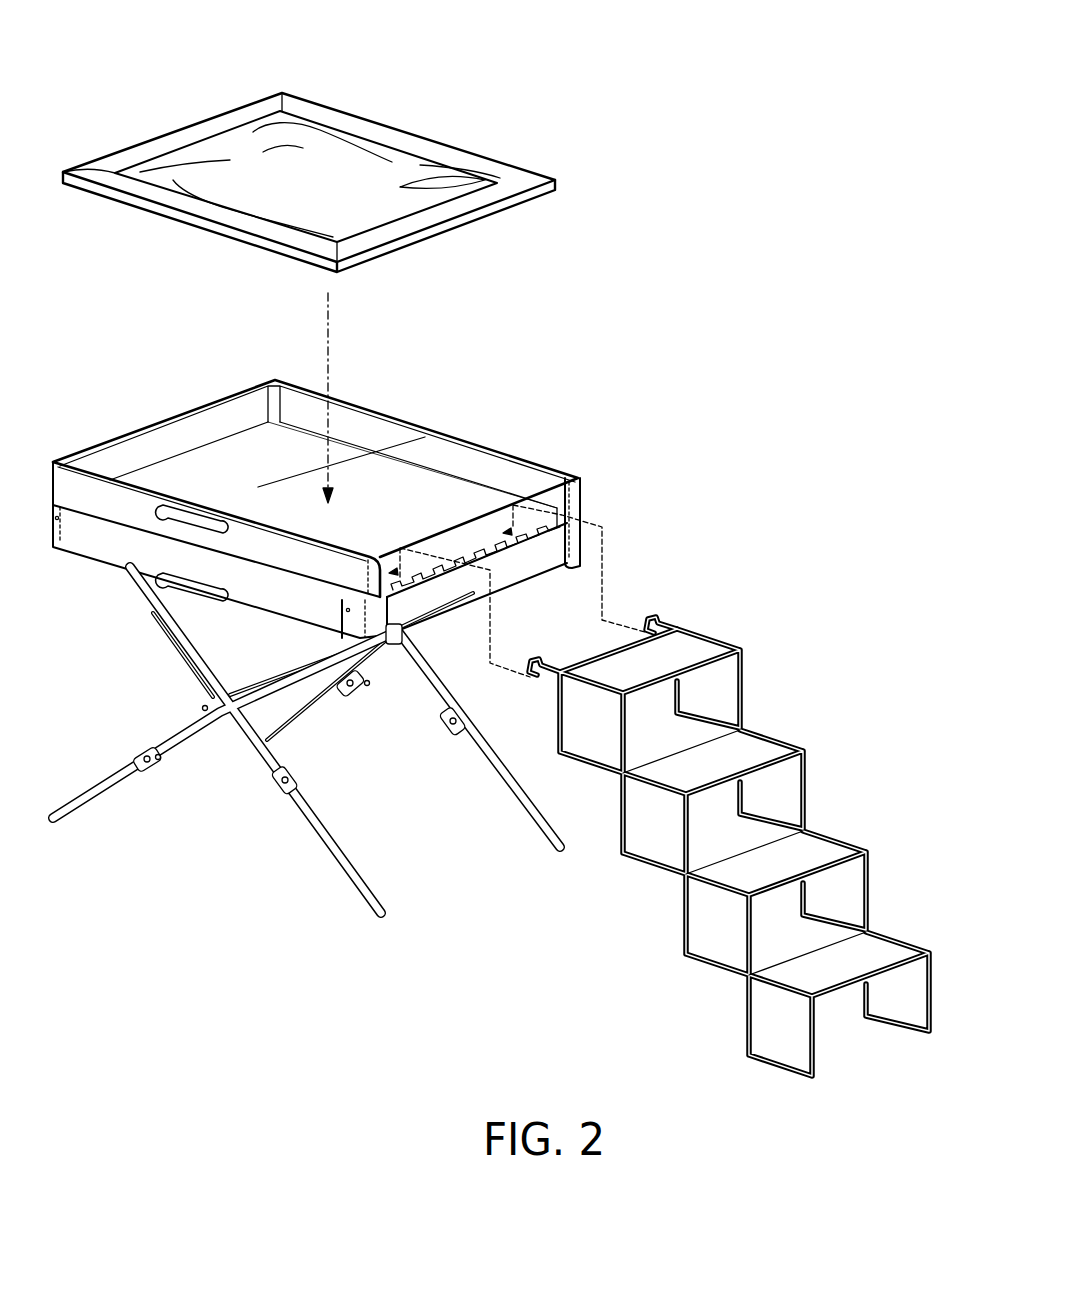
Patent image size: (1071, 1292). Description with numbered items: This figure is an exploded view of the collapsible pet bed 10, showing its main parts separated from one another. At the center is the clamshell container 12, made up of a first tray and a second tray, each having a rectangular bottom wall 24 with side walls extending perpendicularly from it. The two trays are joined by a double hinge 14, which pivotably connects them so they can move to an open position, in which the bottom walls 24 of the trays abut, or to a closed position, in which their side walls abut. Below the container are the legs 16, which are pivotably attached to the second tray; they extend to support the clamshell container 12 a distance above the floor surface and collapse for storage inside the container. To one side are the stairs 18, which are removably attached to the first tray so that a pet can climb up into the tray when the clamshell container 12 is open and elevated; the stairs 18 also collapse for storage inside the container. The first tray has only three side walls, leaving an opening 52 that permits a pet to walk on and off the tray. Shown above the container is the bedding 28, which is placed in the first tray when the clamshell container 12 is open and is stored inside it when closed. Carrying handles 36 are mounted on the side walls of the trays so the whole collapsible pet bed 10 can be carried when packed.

The collapsible pet bed 10 is at (620, 382).
The clamshell container 12 is at (130, 423).
The double hinge 14 is at (458, 532).
The legs 16 is at (214, 732).
The stairs 18 is at (805, 740).
The bottom wall 24 is at (402, 483).
The bedding 28 is at (415, 178).
The carrying handle 36 is at (157, 520).
The opening 52 is at (555, 548).